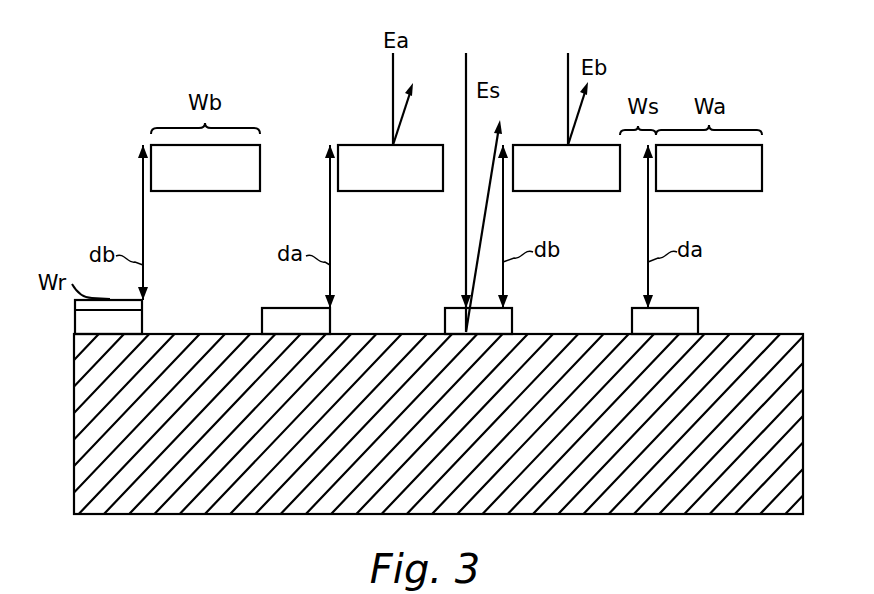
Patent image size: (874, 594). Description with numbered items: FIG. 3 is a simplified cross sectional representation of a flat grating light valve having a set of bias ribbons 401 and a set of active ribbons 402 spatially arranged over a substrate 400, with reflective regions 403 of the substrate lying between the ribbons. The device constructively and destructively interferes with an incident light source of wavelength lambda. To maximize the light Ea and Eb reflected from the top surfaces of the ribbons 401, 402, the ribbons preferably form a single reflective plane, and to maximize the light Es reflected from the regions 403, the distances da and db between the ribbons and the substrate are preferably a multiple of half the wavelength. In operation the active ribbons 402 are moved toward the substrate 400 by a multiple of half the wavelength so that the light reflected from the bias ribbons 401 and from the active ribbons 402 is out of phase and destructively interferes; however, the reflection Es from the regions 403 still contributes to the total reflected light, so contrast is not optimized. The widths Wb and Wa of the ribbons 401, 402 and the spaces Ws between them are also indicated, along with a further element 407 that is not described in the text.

The substrate 400 is at (85, 452).
The bias ribbons 401 is at (151, 175).
The active ribbons 402 is at (346, 151).
The regions of the substrate 403 is at (88, 319).
The third element / layer 407 is at (527, 145).